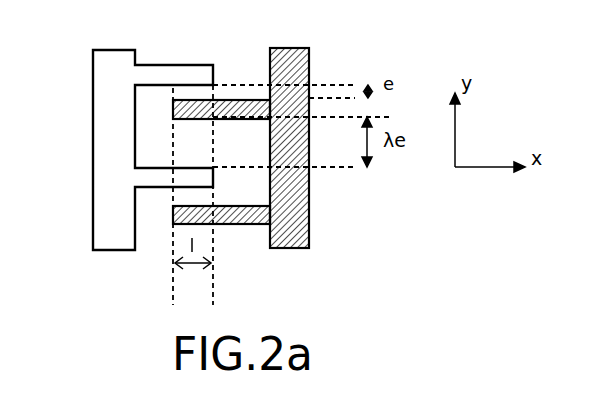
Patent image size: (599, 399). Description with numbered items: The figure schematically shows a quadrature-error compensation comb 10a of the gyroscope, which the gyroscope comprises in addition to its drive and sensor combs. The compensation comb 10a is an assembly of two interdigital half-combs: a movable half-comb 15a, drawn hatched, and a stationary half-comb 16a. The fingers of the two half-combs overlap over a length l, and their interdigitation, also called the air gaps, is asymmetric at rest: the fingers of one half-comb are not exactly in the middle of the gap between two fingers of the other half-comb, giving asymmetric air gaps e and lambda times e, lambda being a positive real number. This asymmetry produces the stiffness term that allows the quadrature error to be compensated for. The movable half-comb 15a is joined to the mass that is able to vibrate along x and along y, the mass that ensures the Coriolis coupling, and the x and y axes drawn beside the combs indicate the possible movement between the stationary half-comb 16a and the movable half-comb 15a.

The quadrature-error compensation comb 10a is at (226, 151).
The movable half-comb 15a is at (309, 233).
The stationary half-comb 16a is at (93, 225).